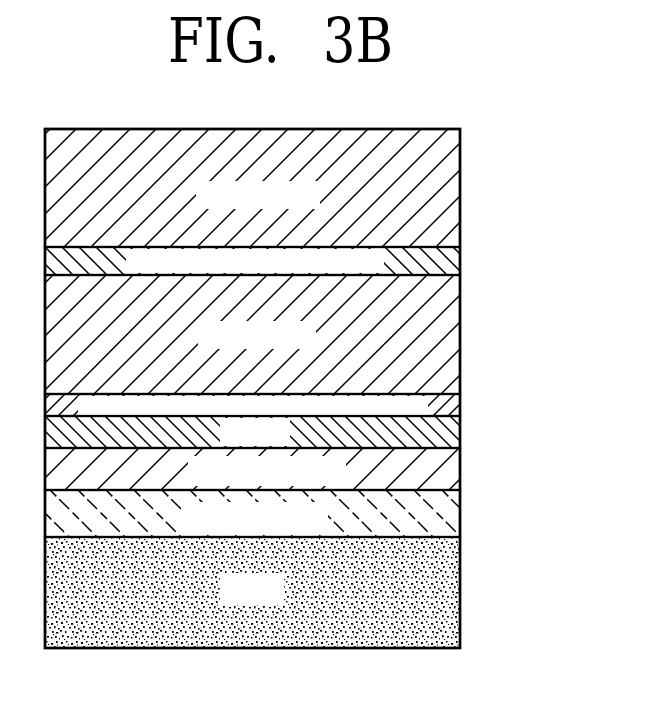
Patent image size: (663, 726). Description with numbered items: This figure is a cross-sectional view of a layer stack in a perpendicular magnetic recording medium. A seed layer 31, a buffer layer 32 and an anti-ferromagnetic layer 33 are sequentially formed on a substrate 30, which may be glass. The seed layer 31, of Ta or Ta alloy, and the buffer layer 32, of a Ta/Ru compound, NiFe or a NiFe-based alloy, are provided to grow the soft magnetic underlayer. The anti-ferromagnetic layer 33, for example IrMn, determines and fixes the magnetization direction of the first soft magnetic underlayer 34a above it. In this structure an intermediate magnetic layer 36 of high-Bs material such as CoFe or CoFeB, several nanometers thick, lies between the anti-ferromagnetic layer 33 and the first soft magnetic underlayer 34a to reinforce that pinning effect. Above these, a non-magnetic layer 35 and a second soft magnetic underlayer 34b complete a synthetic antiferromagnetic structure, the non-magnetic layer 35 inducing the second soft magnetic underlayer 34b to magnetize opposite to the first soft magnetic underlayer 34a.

The second soft magnetic underlayer 34b is at (448, 192).
The non-magnetic layer 35 is at (448, 263).
The first soft magnetic underlayer 34a is at (448, 337).
The intermediate magnetic layer 36 is at (448, 403).
The anti-ferromagnetic layer 33 is at (448, 432).
The buffer layer 32 is at (448, 468).
The seed layer 31 is at (448, 515).
The substrate 30 is at (448, 593).